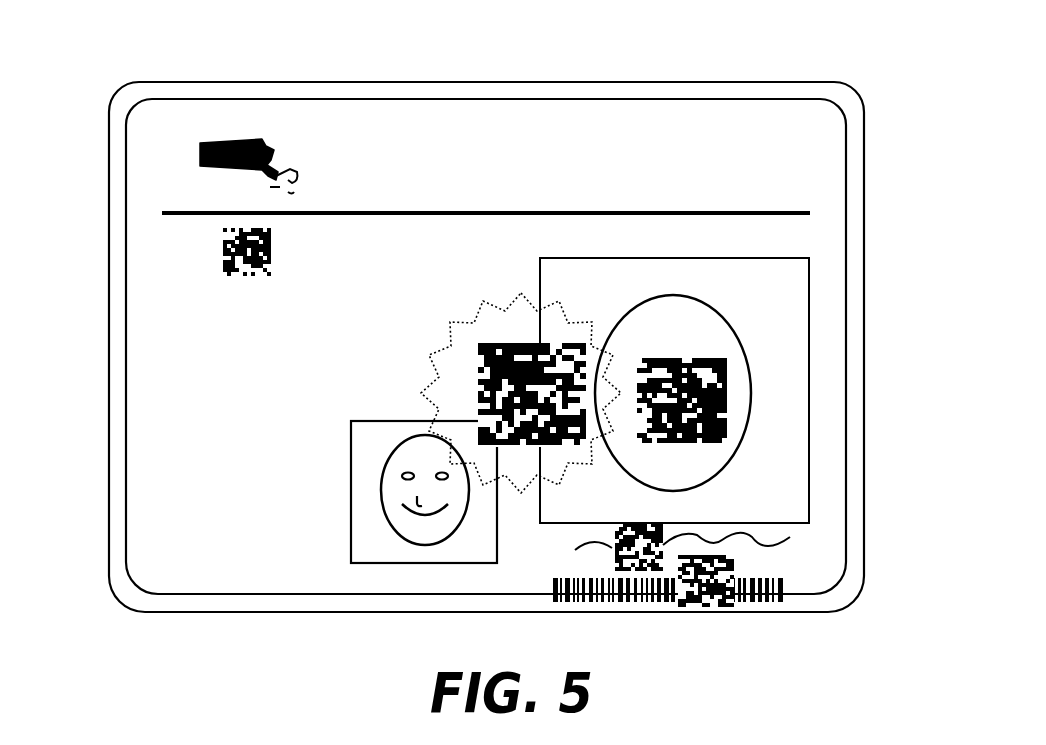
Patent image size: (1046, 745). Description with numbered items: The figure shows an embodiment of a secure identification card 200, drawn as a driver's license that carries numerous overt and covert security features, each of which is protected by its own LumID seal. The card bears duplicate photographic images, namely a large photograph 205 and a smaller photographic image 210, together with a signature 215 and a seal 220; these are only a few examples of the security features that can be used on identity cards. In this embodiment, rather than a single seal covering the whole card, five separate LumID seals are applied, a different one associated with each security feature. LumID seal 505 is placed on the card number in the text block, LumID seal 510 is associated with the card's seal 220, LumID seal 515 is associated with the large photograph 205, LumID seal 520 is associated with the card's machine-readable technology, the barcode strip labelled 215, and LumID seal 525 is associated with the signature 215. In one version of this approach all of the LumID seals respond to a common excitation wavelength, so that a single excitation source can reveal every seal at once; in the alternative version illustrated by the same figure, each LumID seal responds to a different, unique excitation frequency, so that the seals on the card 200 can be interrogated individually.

The identification card 200 is at (670, 82).
The large photograph 205 is at (772, 312).
The photographic image 210 is at (392, 557).
The signature 215 is at (789, 543).
The seal 220 is at (522, 482).
The LumID seal 505 is at (223, 238).
The LumID seal 510 is at (495, 350).
The LumID seal 515 is at (727, 388).
The LumID seal 520 is at (705, 606).
The LumID seal 525 is at (660, 525).